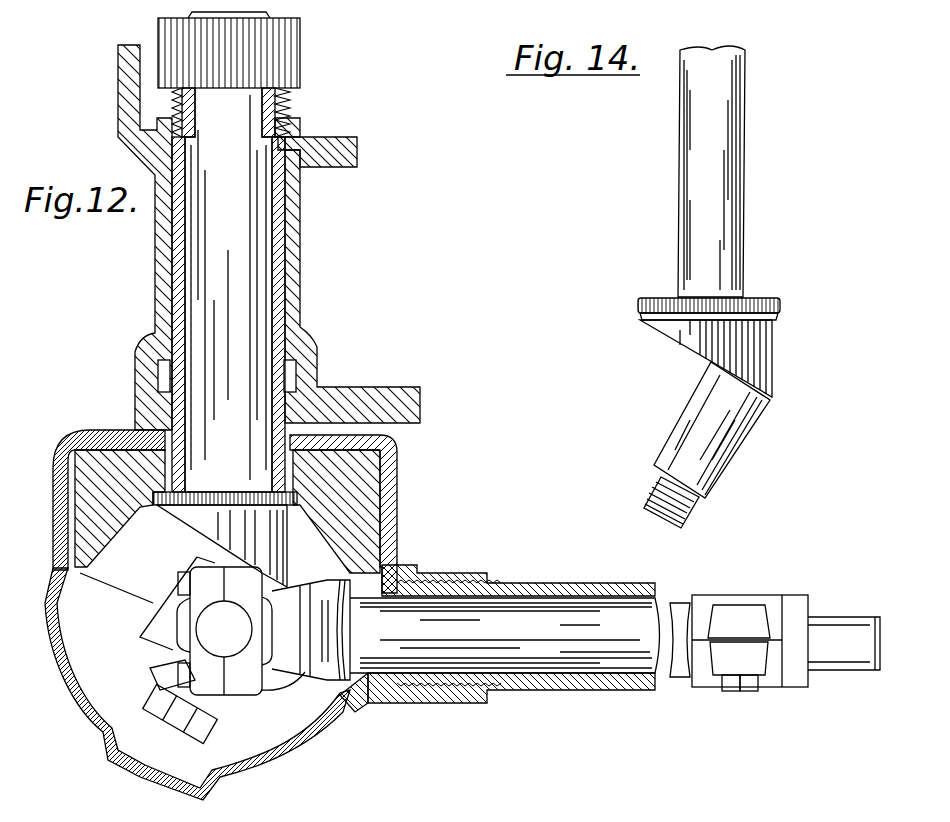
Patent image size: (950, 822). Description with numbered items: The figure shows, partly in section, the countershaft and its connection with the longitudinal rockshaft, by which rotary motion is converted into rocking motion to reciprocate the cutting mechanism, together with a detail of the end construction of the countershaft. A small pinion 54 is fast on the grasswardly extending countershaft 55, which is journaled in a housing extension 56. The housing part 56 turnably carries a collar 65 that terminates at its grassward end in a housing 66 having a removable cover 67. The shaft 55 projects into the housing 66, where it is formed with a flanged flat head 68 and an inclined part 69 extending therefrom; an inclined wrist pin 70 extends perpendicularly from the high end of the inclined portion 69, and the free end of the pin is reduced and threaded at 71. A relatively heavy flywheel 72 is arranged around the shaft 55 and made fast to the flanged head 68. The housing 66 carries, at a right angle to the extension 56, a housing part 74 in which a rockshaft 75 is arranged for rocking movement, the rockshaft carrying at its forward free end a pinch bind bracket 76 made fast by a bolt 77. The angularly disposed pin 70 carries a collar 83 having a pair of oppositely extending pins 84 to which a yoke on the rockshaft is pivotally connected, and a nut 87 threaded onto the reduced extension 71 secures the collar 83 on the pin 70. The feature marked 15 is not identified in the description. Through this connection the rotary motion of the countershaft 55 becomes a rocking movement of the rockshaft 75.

In FIG. 12, the pointer line 15 is at (143, 495).
In FIG. 12, the small pinion 54 is at (300, 52).
In FIG. 12, the countershaft 55 is at (240, 268).
In FIG. 14, the countershaft 55 is at (695, 172).
In FIG. 12, the housing extension 56 is at (300, 210).
In FIG. 12, the collar 65 is at (156, 283).
In FIG. 12, the housing 66 is at (55, 460).
In FIG. 12, the removable cover 67 is at (84, 710).
In FIG. 12, the flanged flat head 68 is at (240, 498).
In FIG. 14, the flanged flat head 68 is at (780, 298).
In FIG. 12, the inclined part 69 is at (190, 530).
In FIG. 14, the inclined part 69 is at (687, 343).
In FIG. 14, the inclined wrist pin 70 is at (737, 440).
In FIG. 14, the reduced threaded extension 71 is at (690, 517).
In FIG. 12, the flywheel 72 is at (355, 482).
In FIG. 12, the housing part 74 is at (520, 690).
In FIG. 12, the rockshaft 75 is at (583, 652).
In FIG. 12, the pinch bind bracket 76 is at (773, 683).
In FIG. 12, the bolt 77 is at (740, 693).
In FIG. 12, the collar 83 is at (146, 620).
In FIG. 12, the pins 84 is at (212, 627).
In FIG. 12, the nut 87 is at (222, 712).